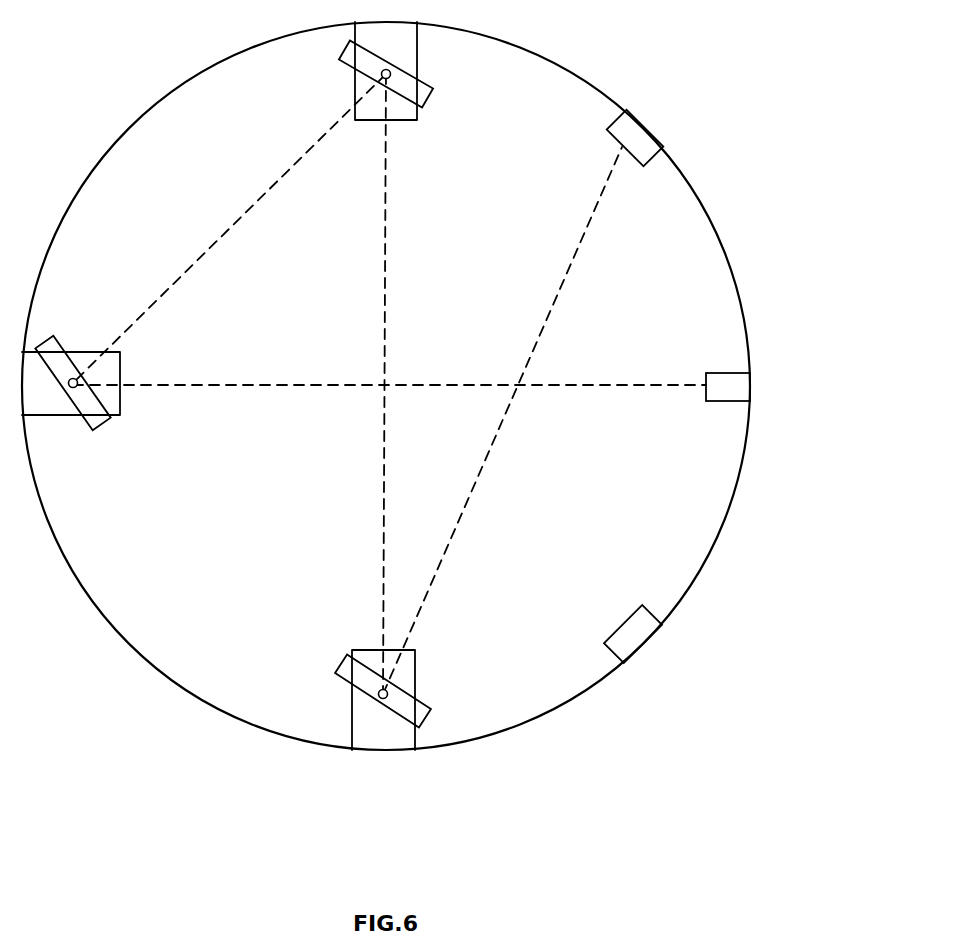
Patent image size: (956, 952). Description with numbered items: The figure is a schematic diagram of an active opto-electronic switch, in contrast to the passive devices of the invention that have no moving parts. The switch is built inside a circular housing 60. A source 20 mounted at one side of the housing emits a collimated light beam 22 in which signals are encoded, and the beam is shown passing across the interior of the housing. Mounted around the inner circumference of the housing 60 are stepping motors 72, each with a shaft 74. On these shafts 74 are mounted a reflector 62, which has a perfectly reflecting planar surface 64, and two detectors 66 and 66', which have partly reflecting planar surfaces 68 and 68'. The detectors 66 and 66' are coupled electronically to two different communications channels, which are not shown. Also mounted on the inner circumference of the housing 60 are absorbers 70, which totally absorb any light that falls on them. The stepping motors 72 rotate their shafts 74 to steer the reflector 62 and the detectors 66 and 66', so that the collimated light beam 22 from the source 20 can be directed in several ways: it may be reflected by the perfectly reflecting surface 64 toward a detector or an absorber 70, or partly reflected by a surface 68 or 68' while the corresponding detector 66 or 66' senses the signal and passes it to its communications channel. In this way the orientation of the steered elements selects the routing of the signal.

The source 20 is at (742, 390).
The collimated light beam 22 is at (603, 387).
The circular housing 60 is at (702, 547).
The reflector 62 is at (53, 347).
The perfectly reflecting planar surface 64 is at (70, 342).
The detector 66 is at (332, 73).
The detector 66' is at (349, 665).
The partly reflecting planar surface 68 is at (315, 111).
The partly reflecting planar surface 68' is at (453, 658).
The absorber 70 is at (633, 386).
The stepping motor 72 is at (219, 386).
The shaft 74 is at (395, 73).